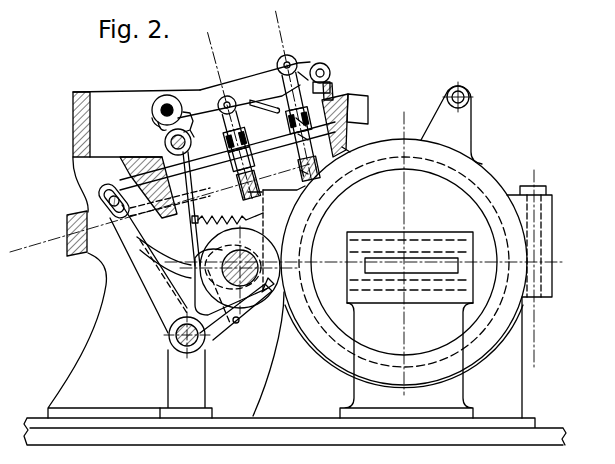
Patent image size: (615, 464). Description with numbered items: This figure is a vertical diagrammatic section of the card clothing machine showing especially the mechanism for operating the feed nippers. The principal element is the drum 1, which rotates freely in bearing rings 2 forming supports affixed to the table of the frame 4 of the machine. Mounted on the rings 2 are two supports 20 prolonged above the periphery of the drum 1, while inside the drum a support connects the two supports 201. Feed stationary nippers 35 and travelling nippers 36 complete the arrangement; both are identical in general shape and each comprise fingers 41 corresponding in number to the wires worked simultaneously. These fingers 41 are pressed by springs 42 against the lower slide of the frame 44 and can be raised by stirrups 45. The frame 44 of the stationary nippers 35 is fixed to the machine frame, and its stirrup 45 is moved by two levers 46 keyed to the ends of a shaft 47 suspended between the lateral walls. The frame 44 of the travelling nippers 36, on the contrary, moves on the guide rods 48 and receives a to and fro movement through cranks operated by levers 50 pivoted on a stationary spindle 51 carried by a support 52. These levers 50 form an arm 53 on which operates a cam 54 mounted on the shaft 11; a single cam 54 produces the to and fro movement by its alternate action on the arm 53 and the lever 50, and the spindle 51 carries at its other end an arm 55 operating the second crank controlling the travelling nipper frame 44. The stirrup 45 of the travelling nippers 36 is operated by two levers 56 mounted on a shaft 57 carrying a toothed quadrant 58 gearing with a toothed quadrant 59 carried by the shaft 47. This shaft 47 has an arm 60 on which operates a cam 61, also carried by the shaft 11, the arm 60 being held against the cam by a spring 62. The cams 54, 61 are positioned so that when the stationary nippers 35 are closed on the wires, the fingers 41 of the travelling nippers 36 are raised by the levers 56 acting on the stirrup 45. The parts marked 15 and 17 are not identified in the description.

The drum 1 is at (487, 173).
The bearing rings 2 is at (513, 190).
The frame 4 is at (96, 318).
The shaft 11 is at (247, 245).
The piston 15 is at (342, 105).
The pin 17 is at (346, 145).
The supports 20 is at (472, 122).
The supports 201 is at (406, 325).
The stationary nippers 35 is at (302, 172).
The travelling nippers 36 is at (258, 192).
The fingers 41 is at (306, 108).
The springs 42 is at (298, 137).
The frame 44 is at (296, 124).
The stirrups 45 is at (232, 100).
The levers 46 is at (301, 68).
The shaft 47 is at (167, 100).
The guide rods 48 is at (272, 160).
The levers 50 is at (128, 238).
The stationary spindle 51 is at (177, 339).
The support 52 is at (205, 387).
The arm 53 is at (259, 298).
The cam 54 is at (213, 338).
The arm 55 is at (146, 287).
The levers 56 is at (262, 98).
The shaft 57 is at (191, 142).
The toothed quadrant 58 is at (190, 124).
The toothed quadrant 59 is at (152, 118).
The arm 60 is at (192, 224).
The cam 61 is at (238, 322).
The spring 62 is at (226, 216).